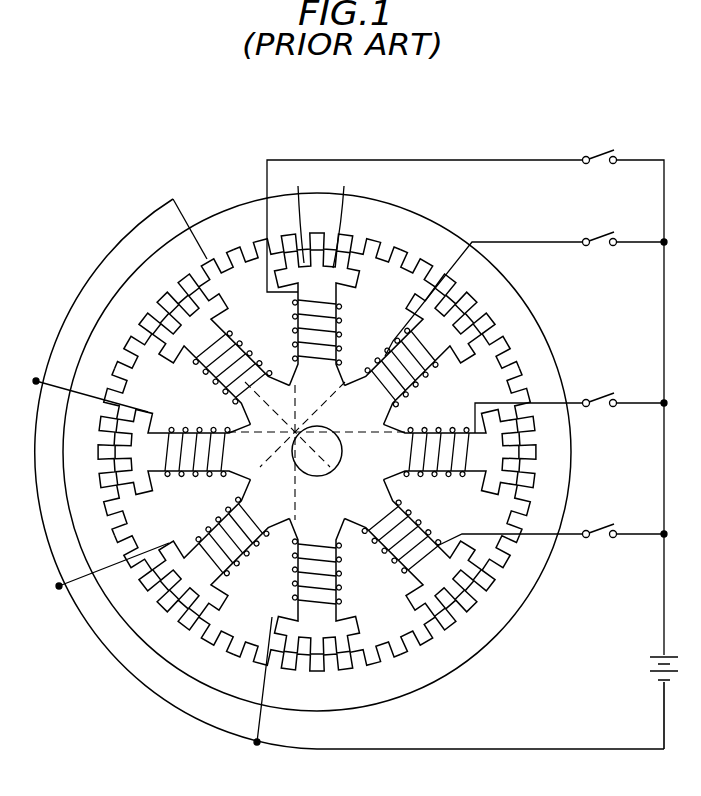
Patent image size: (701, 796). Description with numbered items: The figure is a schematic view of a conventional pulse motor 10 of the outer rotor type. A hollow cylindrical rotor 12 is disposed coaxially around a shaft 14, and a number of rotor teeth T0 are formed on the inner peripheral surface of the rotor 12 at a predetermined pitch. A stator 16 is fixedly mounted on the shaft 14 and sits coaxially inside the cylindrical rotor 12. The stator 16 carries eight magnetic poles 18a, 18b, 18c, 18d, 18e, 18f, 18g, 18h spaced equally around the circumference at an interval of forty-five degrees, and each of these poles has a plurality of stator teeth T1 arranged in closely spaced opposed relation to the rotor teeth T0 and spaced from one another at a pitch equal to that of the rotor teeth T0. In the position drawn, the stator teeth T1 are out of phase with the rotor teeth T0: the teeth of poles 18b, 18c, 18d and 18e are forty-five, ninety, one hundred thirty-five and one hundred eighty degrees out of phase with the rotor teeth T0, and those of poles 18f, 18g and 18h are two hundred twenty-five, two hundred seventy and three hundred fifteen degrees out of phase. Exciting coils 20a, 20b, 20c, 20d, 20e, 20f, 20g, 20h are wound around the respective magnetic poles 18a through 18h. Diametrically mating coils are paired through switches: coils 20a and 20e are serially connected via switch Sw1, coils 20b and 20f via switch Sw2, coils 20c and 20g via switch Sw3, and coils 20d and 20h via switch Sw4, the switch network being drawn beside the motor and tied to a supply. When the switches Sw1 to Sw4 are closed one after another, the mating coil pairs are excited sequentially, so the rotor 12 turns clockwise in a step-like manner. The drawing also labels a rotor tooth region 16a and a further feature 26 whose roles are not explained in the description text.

The pulse motor 10 is at (181, 190).
The rotor 12 is at (458, 238).
The shaft 14 is at (328, 468).
The stator 16 is at (333, 393).
The rotor teeth 16a is at (349, 252).
The magnetic pole 18a is at (353, 272).
The magnetic pole 18b is at (478, 352).
The magnetic pole 18c is at (493, 487).
The magnetic pole 18d is at (422, 607).
The magnetic pole 18e is at (282, 640).
The magnetic pole 18f is at (167, 557).
The magnetic pole 18g is at (137, 420).
The magnetic pole 18h is at (222, 300).
The exciting coil 20a is at (337, 310).
The exciting coil 20b is at (420, 380).
The exciting coil 20c is at (437, 476).
The exciting coil 20d is at (402, 570).
The exciting coil 20e is at (297, 580).
The exciting coil 20f is at (218, 523).
The exciting coil 20g is at (193, 431).
The exciting coil 20h is at (252, 358).
The pole tooth 26 is at (419, 258).
The switch Sw1 is at (465, 391).
The switch Sw2 is at (526, 283).
The switch Sw3 is at (571, 402).
The switch Sw4 is at (552, 523).
The stator teeth T1 is at (298, 216).
The rotor teeth T0 is at (344, 219).